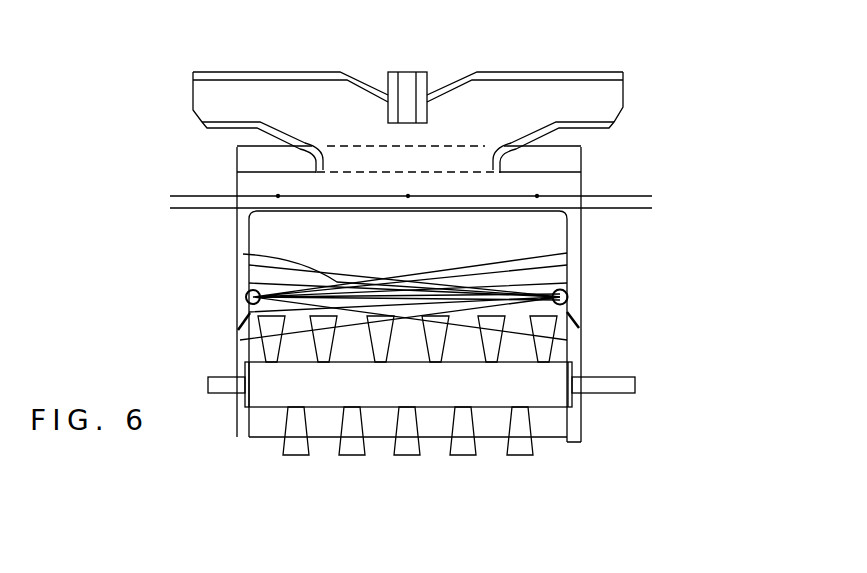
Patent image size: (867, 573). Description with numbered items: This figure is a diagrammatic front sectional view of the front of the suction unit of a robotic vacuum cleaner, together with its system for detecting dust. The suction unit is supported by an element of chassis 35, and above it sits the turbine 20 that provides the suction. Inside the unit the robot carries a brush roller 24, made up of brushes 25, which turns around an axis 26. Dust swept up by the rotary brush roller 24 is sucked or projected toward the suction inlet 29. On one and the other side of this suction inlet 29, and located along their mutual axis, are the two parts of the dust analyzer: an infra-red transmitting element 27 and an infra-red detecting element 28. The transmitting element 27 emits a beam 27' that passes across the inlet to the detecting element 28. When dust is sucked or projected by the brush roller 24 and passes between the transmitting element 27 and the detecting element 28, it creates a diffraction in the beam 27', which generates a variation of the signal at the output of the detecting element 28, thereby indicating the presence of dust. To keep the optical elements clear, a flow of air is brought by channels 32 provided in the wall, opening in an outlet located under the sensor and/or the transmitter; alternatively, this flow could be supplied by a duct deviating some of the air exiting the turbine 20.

The turbine 20 is at (475, 105).
The element of chassis 35 is at (625, 205).
The infra-red transmitting element 27 is at (200, 295).
The beam 27' is at (363, 288).
The infra-red detecting element 28 is at (567, 297).
The channels 32 is at (240, 331).
The axis 26 is at (623, 388).
The brush roller 24 is at (395, 388).
The suction inlet 29 is at (407, 423).
The brushes 25 is at (517, 423).